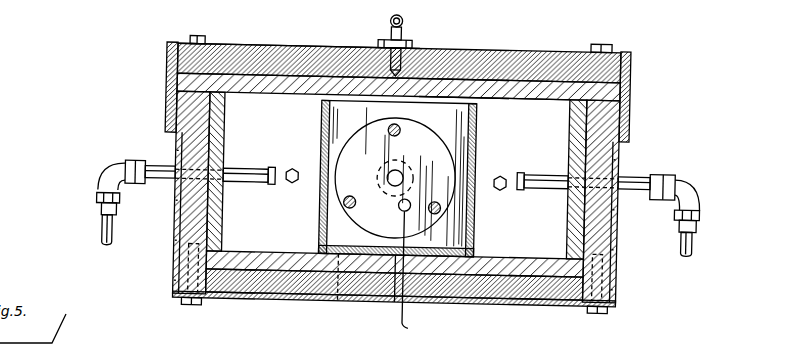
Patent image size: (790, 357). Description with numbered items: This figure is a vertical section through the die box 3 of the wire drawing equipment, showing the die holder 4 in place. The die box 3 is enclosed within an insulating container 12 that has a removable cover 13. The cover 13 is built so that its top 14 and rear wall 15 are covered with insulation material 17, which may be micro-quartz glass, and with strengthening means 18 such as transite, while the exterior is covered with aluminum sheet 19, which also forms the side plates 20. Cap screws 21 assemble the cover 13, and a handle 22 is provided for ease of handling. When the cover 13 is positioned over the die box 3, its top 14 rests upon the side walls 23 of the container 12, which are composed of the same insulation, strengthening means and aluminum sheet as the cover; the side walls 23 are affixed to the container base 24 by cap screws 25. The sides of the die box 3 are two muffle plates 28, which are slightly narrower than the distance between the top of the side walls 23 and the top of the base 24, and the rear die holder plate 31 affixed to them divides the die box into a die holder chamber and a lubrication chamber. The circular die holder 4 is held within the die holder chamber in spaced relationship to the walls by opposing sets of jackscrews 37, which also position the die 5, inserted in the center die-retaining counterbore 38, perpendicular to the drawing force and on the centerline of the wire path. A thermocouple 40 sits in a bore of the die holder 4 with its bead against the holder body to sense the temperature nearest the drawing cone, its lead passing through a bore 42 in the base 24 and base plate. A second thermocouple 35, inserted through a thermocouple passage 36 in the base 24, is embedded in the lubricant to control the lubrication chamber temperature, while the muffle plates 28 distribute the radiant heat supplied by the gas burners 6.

The die box 3 is at (476, 233).
The die holder 4 is at (395, 178).
The die 5 is at (388, 180).
The gas burners 6 is at (112, 168).
The insulating container 12 is at (177, 249).
The removable cover 13 is at (541, 53).
The top 14 is at (474, 52).
The rear wall 15 is at (397, 175).
The insulation material 17 is at (262, 44).
The strengthening means 18 is at (504, 97).
The aluminum sheet 19 is at (304, 45).
The side plates 20 is at (168, 102).
The cap screws 21 is at (205, 36).
The handle 22 is at (404, 22).
The side walls 23 is at (185, 221).
The container base 24 is at (525, 300).
The cap screws 25 is at (195, 304).
The muffle plates 28 is at (320, 137).
The rear die holder plate 31 is at (398, 177).
The thermocouple 35 is at (333, 300).
The thermocouple passage 36 is at (352, 303).
The jackscrews 37 is at (399, 130).
The die-retaining counterbore 38 is at (400, 176).
The thermocouple 40 is at (404, 212).
The bore 42 is at (413, 288).